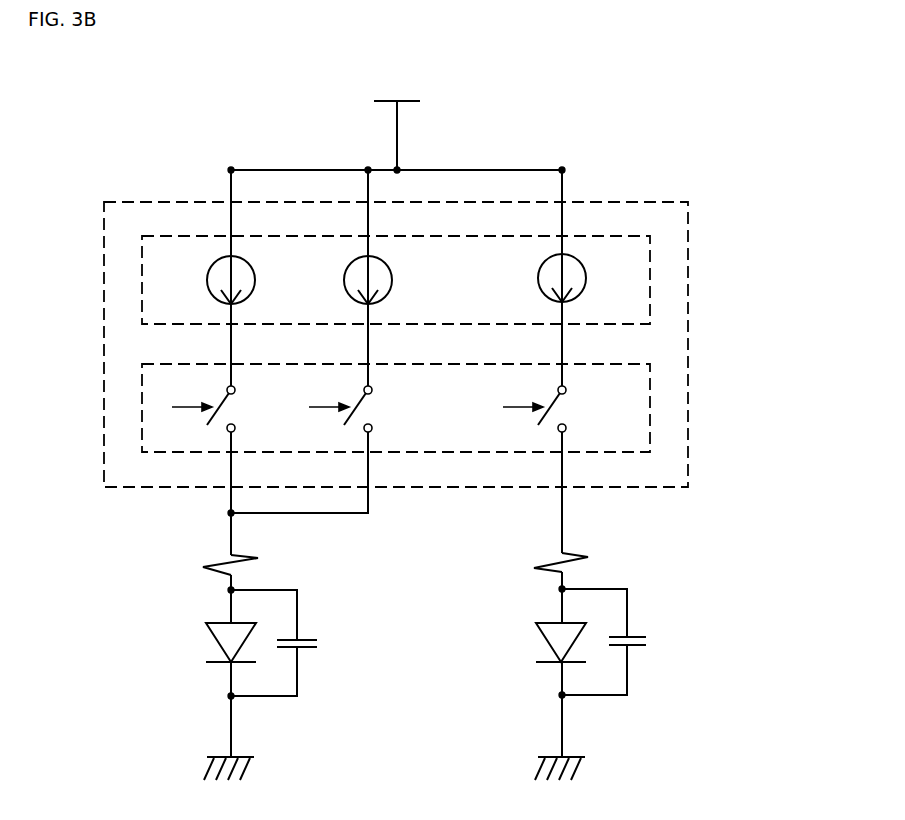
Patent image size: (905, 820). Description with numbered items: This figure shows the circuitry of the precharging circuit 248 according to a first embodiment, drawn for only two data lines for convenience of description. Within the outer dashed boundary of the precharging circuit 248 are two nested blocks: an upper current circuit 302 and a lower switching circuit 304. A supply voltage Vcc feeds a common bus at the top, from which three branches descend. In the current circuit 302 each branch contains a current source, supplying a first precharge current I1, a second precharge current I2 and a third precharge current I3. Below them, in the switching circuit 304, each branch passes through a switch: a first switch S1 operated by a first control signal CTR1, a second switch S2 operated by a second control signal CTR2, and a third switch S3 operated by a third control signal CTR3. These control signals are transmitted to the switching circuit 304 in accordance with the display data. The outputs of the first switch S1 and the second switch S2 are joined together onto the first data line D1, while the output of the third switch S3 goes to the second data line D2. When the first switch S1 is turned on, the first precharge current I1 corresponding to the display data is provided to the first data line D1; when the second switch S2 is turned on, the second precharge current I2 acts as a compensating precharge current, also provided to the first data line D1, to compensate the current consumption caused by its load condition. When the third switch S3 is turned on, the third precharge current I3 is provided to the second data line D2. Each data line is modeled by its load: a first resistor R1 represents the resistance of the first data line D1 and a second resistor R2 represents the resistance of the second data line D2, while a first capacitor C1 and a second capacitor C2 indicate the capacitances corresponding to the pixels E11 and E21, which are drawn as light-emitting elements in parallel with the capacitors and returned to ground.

The precharging circuit 248 is at (688, 460).
The current circuit 302 is at (650, 278).
The switching circuit 304 is at (650, 389).
The supply voltage Vcc is at (397, 121).
The first precharge current I1 is at (216, 280).
The second precharge current I2 is at (352, 280).
The third precharge current I3 is at (546, 278).
The first switch S1 is at (236, 409).
The second switch S2 is at (372, 409).
The third switch S3 is at (566, 409).
The first control signal CTR1 is at (178, 396).
The second control signal CTR2 is at (315, 396).
The third control signal CTR3 is at (509, 396).
The first data line D1 is at (254, 535).
The second data line D2 is at (583, 531).
The first resistor R1 is at (250, 564).
The second resistor R2 is at (580, 560).
The first capacitor C1 is at (291, 643).
The second capacitor C2 is at (620, 642).
The pixel E11 is at (202, 642).
The pixel E21 is at (530, 642).